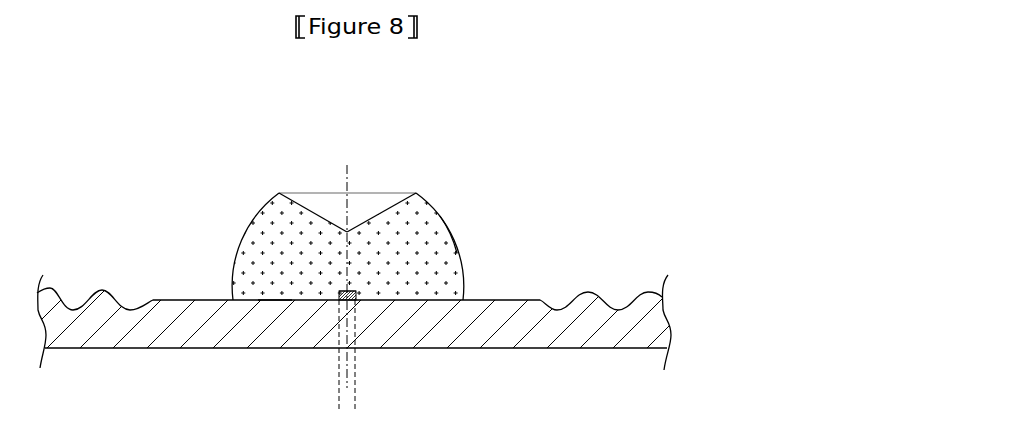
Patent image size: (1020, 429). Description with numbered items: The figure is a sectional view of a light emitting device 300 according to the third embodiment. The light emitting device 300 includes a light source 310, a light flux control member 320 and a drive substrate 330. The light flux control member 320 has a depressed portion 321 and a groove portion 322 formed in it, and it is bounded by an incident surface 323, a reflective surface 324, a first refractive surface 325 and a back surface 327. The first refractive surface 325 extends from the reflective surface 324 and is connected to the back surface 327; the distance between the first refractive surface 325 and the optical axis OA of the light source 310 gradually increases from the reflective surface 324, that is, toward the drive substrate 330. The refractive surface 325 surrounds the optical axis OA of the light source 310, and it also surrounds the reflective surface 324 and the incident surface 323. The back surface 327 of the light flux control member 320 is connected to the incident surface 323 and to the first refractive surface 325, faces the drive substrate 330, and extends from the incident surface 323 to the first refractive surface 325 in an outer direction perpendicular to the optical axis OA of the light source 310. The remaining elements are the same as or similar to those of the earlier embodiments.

The light emitting device 300 is at (634, 99).
The light source 310 is at (356, 297).
The light flux control member 320 is at (357, 197).
The depressed portion 321 is at (318, 203).
The groove portion 322 is at (310, 403).
The incident surface 323 is at (339, 291).
The reflective surface 324 is at (400, 207).
The first refractive surface 325 is at (447, 233).
The back surface 327 is at (288, 301).
The drive substrate 330 is at (541, 337).
The optical axis OA is at (347, 266).